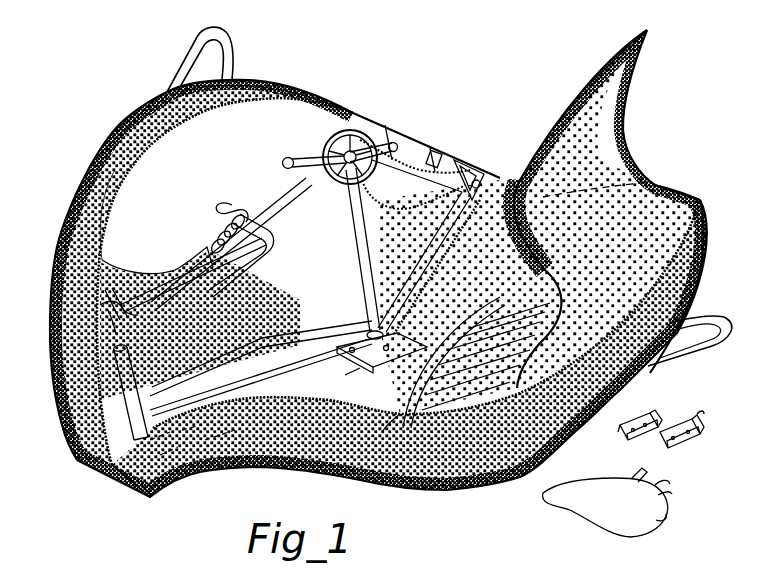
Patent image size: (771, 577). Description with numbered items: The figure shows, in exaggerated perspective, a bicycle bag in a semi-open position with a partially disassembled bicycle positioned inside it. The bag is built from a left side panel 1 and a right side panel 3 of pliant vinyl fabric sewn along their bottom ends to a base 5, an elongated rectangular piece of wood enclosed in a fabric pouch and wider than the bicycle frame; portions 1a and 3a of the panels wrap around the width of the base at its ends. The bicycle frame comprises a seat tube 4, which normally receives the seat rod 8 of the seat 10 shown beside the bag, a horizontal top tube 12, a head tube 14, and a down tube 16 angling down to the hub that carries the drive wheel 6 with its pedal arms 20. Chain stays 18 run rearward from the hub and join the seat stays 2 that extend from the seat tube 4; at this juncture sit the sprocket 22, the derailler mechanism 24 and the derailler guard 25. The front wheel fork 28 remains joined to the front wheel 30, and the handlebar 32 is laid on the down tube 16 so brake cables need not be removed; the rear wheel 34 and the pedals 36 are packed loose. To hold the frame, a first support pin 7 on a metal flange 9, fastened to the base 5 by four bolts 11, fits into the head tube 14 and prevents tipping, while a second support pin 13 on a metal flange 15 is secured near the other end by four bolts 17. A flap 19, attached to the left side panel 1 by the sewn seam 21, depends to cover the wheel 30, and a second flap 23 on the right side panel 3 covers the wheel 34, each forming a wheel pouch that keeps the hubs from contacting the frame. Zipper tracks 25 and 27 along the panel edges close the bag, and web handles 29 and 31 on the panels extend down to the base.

The left side panel 1 is at (83, 181).
The side panel end portion 1a is at (74, 413).
The seat stays 2 is at (434, 248).
The right side panel 3 is at (708, 235).
The side panel end portion 3a is at (118, 476).
The seat tube 4 is at (353, 233).
The base 5 is at (76, 463).
The drive wheel 6 is at (360, 124).
The first support pin 7 is at (141, 494).
The seat rod 8 is at (634, 477).
The metal flange base 9 is at (187, 470).
The seat 10 is at (660, 503).
The bolts 11 is at (192, 436).
The top tube 12 is at (295, 338).
The second support pin 13 is at (350, 357).
The head tube 14 is at (110, 357).
The metal flange base 15 is at (420, 332).
The down tube 16 is at (278, 210).
The bolts 17 is at (358, 372).
The chain stays 18 is at (426, 146).
The flap 19 is at (174, 246).
The pedal arms 20 is at (287, 157).
The sewn seam 21 is at (264, 86).
The sprocket 22 is at (440, 156).
The second flap 23 is at (616, 112).
The derailler mechanism 24 is at (472, 163).
The derailler guard / zipper track 25 is at (137, 178).
The zipper track 27 is at (697, 197).
The front wheel fork 28 is at (190, 377).
The handle 29 is at (186, 72).
The front wheel 30 is at (110, 296).
The handle 31 is at (715, 322).
The handlebar 32 is at (270, 255).
The rear wheel 34 is at (393, 433).
The pedals 36 is at (658, 410).